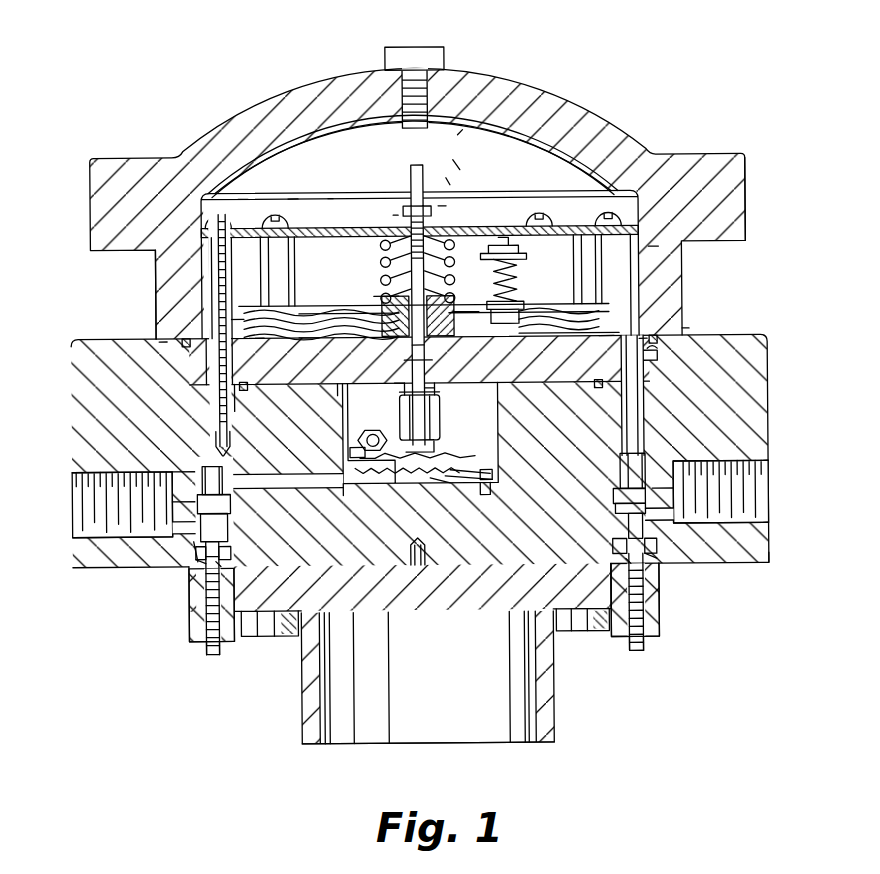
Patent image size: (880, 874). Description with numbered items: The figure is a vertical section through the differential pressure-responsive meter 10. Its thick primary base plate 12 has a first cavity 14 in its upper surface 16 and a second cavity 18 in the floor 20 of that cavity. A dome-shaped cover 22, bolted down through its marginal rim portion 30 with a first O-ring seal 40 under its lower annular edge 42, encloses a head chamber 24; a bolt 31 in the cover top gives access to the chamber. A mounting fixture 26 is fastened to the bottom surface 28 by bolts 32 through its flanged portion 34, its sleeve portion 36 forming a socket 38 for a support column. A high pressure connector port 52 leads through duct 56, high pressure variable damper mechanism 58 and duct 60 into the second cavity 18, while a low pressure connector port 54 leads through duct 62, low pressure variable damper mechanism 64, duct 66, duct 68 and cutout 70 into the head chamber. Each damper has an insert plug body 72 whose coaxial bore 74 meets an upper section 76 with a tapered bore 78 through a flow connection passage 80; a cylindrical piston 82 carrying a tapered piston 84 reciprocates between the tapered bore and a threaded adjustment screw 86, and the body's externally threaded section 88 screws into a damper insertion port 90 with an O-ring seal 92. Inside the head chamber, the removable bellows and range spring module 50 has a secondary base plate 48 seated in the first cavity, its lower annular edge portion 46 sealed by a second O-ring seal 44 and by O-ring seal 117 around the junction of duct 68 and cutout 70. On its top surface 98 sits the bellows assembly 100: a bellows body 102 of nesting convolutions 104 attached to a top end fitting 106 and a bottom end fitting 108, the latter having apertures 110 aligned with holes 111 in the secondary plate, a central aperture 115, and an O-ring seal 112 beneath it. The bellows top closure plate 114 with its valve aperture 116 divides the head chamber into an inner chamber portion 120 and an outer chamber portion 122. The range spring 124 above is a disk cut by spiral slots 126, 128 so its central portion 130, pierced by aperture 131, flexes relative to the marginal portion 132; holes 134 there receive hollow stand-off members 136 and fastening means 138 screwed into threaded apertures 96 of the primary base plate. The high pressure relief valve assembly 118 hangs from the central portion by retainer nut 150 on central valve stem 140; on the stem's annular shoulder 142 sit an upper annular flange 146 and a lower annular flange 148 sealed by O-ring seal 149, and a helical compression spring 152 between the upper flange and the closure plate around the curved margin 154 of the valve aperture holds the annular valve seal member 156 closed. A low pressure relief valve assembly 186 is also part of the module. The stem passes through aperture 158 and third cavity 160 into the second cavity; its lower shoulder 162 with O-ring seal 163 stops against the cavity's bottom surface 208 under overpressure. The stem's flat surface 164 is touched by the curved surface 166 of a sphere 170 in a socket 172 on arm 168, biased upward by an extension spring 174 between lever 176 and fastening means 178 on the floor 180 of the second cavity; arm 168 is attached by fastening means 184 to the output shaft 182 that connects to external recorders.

The differential pressure-responsive device 10 is at (682, 126).
The primary base plate 12 is at (768, 345).
The first cavity 14 is at (648, 352).
The upper surface 16 is at (80, 337).
The second cavity 18 is at (498, 435).
The floor 20 is at (545, 383).
The dome-shaped cover 22 is at (525, 75).
The head chamber 24 is at (470, 122).
The supporting or mounting fixture 26 is at (612, 724).
The bottom surface 28 is at (730, 570).
The marginal rim portion 30 is at (747, 210).
The bolt 31 is at (412, 47).
The bolts 32 is at (250, 636).
The flanged portion 34 is at (266, 636).
The sleeve portion 36 is at (552, 730).
The cylindrical socket 38 is at (320, 700).
The first O-ring seal 40 is at (188, 346).
The lower annular edge 42 is at (160, 342).
The second O-ring seal 44 is at (245, 381).
The lower annular edge portion 46 is at (245, 392).
The secondary base plate 48 is at (330, 395).
The bellows and range spring module 50 is at (369, 141).
The high pressure pipe connector port 52 is at (92, 525).
The low pressure pipe connector port 54 is at (750, 520).
The duct 56 is at (190, 520).
The high pressure variable damper mechanism 58 is at (178, 653).
The duct 60 is at (268, 470).
The duct 62 is at (662, 515).
The low pressure variable damper mechanism 64 is at (668, 643).
The duct 66 is at (645, 430).
The duct 68 is at (655, 365).
The cutout 70 is at (685, 310).
The insert plug body 72 is at (197, 645).
The coaxial bore 74 is at (200, 610).
The upper section 76 is at (231, 505).
The tapered bore 78 is at (222, 480).
The flow connection passage 80 is at (222, 530).
The cylindrical piston 82 is at (228, 548).
The tapered piston 84 is at (228, 512).
The threaded adjustment screw 86 is at (210, 655).
The externally threaded section 88 is at (195, 545).
The damper insertion port 90 is at (203, 580).
The O-ring seal 92 is at (198, 560).
The internally threaded aperture 96 is at (216, 430).
The top surface 98 is at (335, 337).
The bellows assembly 100 is at (322, 254).
The metal bellows body 102 is at (245, 312).
The convolutions 104 is at (640, 300).
The top end fitting 106 is at (290, 312).
The bottom end fitting 108 is at (590, 336).
The apertures 110 is at (240, 326).
The apertures 111 is at (207, 370).
The O-ring seal 112 is at (280, 337).
The bellows top closure plate 114 is at (431, 270).
The aperture 115 is at (445, 340).
The valve aperture 116 is at (455, 300).
The O-ring seal 117 is at (648, 385).
The high pressure relief valve assembly 118 is at (480, 206).
The inner chamber portion 120 is at (349, 345).
The outer chamber portion 122 is at (585, 237).
The range spring 124 is at (495, 192).
The spiral slot 126 is at (335, 198).
The spiral slot 128 is at (300, 226).
The central portion 130 is at (417, 165).
The aperture 131 is at (454, 207).
The marginal portion 132 is at (240, 198).
The apertures 134 is at (214, 245).
The stand-off member 136 is at (213, 270).
The fastening means 138 is at (215, 218).
The central valve stem 140 is at (448, 178).
The annular shoulder 142 is at (398, 337).
The upper annular flange 146 is at (385, 242).
The lower annular flange 148 is at (455, 330).
The O-ring seal 149 is at (398, 300).
The threaded retainer nut 150 is at (452, 185).
The helical compression spring 152 is at (395, 215).
The upwardly curved margin 154 is at (400, 275).
The annular valve seal member 156 is at (458, 320).
The aperture 158 is at (448, 372).
The third cavity 160 is at (405, 392).
The annular shoulder 162 is at (400, 396).
The O-ring seal 163 is at (440, 390).
The flat surface 164 is at (440, 440).
The curved surface 166 is at (395, 473).
The arm 168 is at (432, 482).
The sphere 170 is at (470, 483).
The socket 172 is at (440, 462).
The extension spring 174 is at (486, 498).
The lever 176 is at (343, 483).
The fastening means 178 is at (494, 475).
The floor 180 is at (415, 500).
The output shaft 182 is at (358, 440).
The fastening means 184 is at (350, 452).
The low pressure relief valve assembly 186 is at (534, 282).
The bottom surface 208 is at (400, 383).